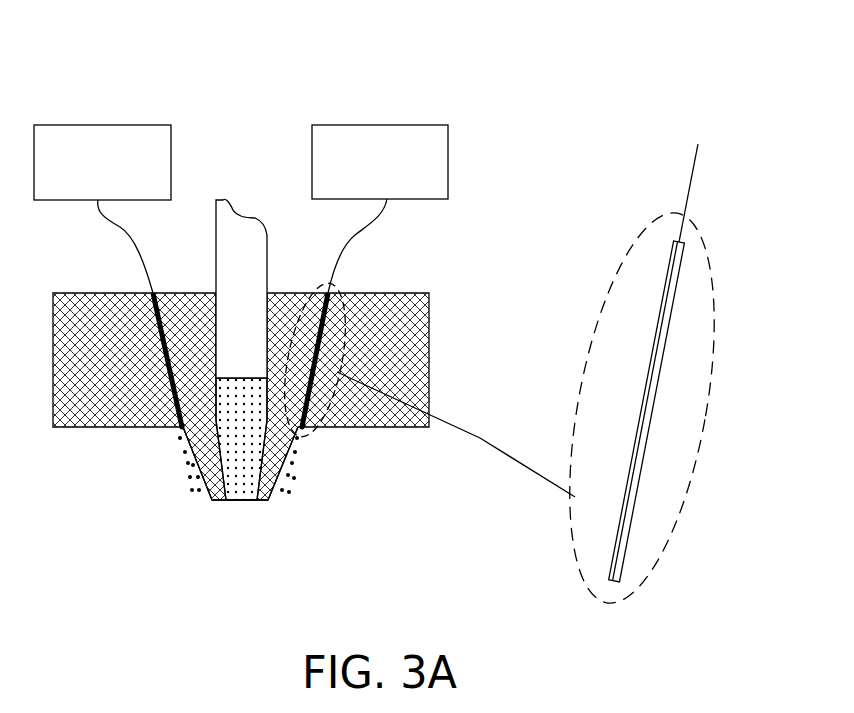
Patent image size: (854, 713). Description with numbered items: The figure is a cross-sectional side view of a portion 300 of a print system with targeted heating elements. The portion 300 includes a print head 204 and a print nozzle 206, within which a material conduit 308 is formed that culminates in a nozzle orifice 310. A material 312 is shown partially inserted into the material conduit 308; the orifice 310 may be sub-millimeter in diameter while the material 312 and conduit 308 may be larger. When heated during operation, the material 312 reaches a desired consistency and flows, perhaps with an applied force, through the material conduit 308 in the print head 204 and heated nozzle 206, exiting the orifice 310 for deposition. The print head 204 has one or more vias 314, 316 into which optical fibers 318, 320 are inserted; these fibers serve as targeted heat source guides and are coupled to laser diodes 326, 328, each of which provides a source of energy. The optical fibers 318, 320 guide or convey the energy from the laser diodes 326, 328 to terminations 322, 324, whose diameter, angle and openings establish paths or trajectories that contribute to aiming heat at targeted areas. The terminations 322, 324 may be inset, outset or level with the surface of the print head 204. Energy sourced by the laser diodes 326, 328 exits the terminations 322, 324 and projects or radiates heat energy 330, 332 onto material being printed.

The portion 300 is at (431, 72).
The print head 204 is at (429, 358).
The print nozzle 206 is at (290, 462).
The material conduit 308 is at (237, 500).
The nozzle orifice 310 is at (250, 453).
The material 312 is at (231, 200).
The via 314 is at (153, 293).
The via 316 is at (334, 293).
The optical fiber 318 is at (108, 224).
The optical fiber 320 is at (378, 223).
The termination 322 is at (180, 430).
The termination 324 is at (301, 431).
The laser diode 326 is at (102, 162).
The laser diode 328 is at (380, 162).
The heat energy 330 is at (198, 495).
The heat energy 332 is at (282, 497).